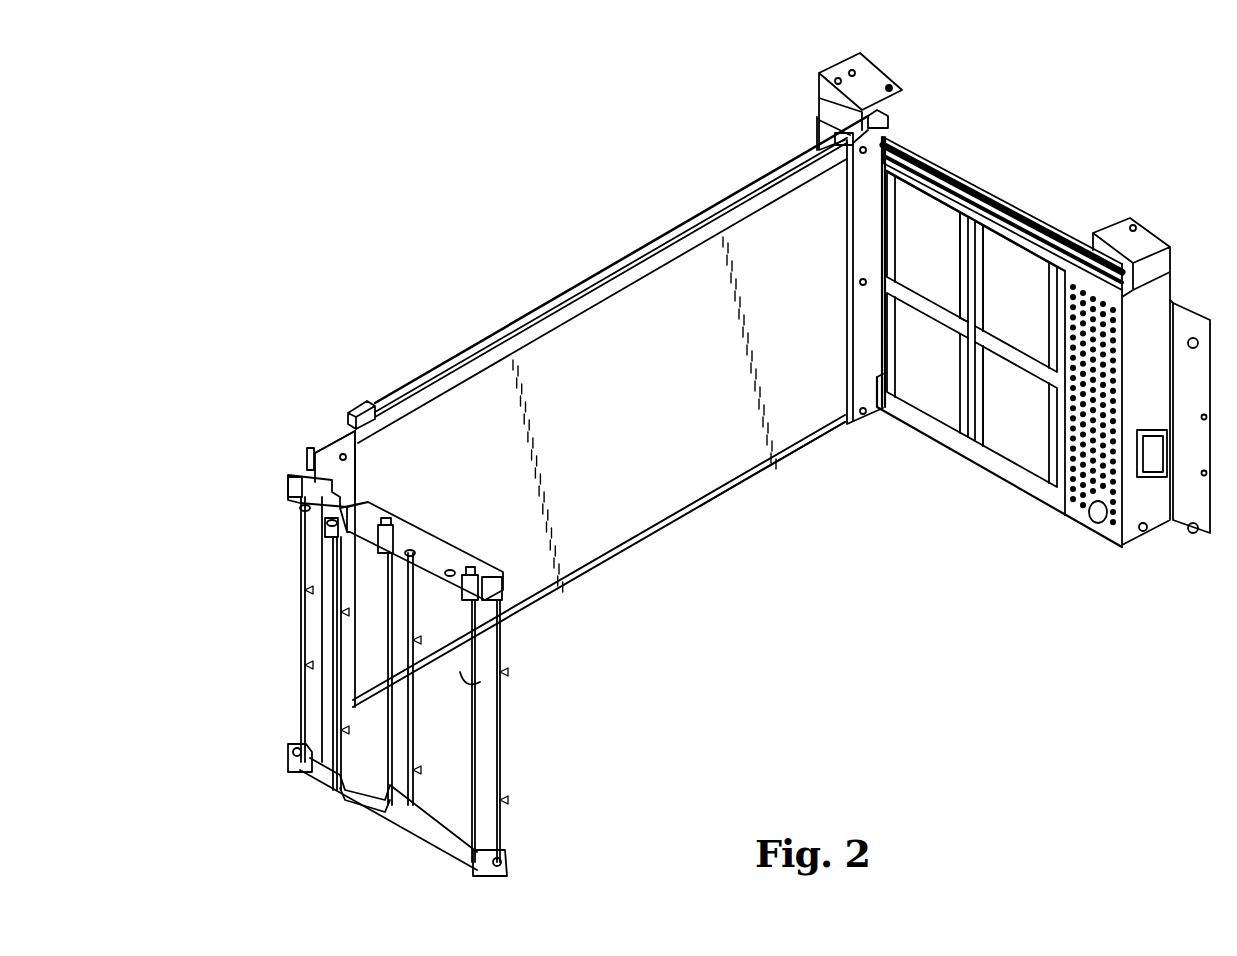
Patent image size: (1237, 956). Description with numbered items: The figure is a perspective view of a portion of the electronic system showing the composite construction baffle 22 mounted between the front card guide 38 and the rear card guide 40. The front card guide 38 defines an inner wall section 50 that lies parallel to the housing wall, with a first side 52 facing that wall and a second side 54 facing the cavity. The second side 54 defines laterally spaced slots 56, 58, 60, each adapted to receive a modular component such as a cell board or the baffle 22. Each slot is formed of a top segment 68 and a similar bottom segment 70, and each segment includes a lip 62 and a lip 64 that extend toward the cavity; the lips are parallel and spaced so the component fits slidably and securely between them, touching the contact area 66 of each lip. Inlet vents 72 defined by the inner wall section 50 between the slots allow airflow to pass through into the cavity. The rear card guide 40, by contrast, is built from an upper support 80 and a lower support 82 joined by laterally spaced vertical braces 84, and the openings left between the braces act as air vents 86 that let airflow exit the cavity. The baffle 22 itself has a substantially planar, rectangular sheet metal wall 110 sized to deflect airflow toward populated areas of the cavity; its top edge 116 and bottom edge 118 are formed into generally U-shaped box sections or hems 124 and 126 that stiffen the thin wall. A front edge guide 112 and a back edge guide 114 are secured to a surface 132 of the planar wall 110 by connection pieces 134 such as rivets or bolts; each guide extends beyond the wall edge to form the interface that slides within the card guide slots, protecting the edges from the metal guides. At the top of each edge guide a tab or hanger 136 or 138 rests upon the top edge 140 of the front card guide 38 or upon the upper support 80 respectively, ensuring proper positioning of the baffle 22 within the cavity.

The composite construction baffle 22 is at (682, 532).
The front card guide 38 is at (1038, 205).
The rear card guide 40 is at (292, 713).
The inner wall section 50 is at (1070, 507).
The first side 52 is at (1013, 203).
The second side 54 is at (940, 430).
The slot 56 is at (1050, 477).
The slot 58 is at (963, 433).
The slot 60 is at (880, 410).
The lip 62 is at (972, 307).
The lip 64 is at (962, 270).
The contact area 66 is at (960, 240).
The top segment 68 is at (975, 261).
The bottom segment 70 is at (978, 379).
The inlet vents 72 is at (917, 203).
The upper support 80 is at (443, 553).
The lower support 82 is at (453, 837).
The vertical braces 84 is at (310, 618).
The air vents 86 is at (467, 680).
The planar wall 110 is at (587, 547).
The front edge guide 112 is at (940, 178).
The back edge guide 114 is at (327, 458).
The top edge 116 is at (632, 260).
The bottom edge 118 is at (807, 450).
The box section or hem 124 is at (553, 325).
The box section or hem 126 is at (743, 480).
The surface 132 is at (753, 238).
The connection pieces 134 is at (347, 458).
The tab or hanger 136 is at (887, 137).
The tab or hanger 138 is at (313, 453).
The top edge 140 is at (885, 138).